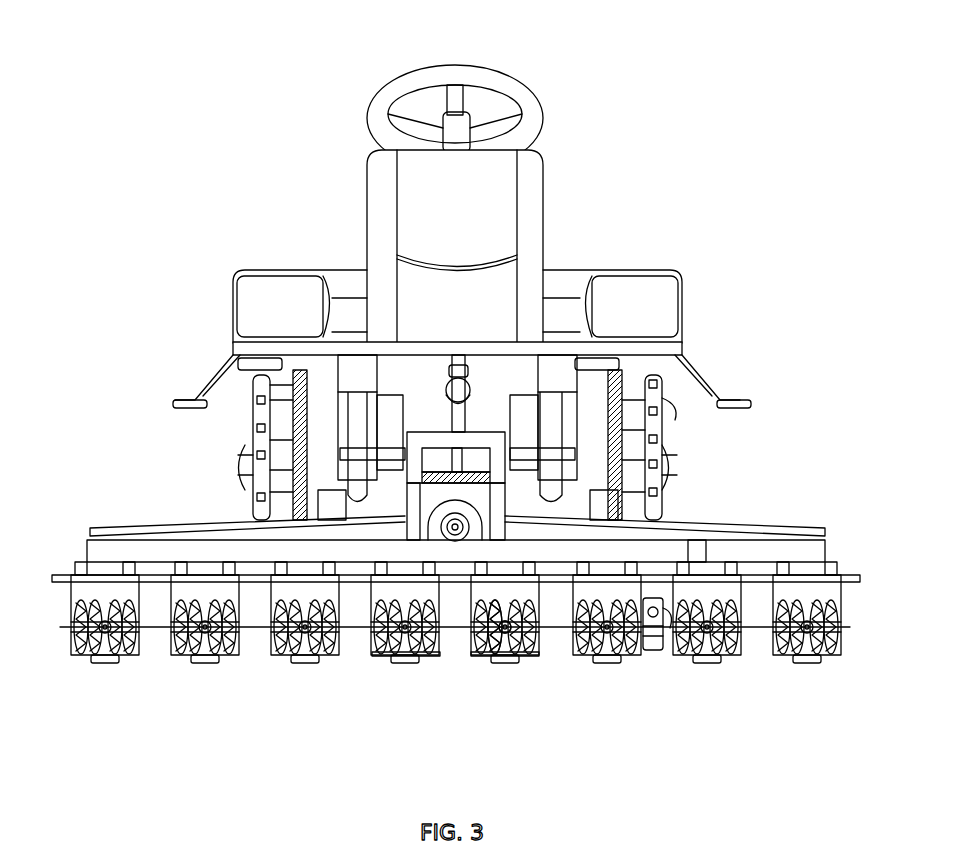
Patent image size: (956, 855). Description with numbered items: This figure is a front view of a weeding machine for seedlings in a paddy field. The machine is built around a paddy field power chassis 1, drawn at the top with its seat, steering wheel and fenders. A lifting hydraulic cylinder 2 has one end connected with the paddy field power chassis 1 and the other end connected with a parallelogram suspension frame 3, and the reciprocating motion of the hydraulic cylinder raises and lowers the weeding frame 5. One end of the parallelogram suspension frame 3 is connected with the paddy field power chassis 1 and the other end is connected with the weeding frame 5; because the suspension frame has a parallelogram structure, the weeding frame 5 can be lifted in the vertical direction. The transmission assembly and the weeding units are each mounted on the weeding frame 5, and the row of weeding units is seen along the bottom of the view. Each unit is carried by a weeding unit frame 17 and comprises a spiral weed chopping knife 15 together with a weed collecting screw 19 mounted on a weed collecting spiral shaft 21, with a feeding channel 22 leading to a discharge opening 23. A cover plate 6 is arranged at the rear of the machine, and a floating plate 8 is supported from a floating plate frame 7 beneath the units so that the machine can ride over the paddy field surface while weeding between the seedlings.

The paddy field power chassis 1 is at (473, 247).
The lifting hydraulic cylinder 2 is at (453, 373).
The parallelogram suspension frame 3 is at (457, 452).
The weeding frame 5 is at (512, 447).
The cover plate 6 is at (697, 545).
The floating plate frame 7 is at (650, 638).
The floating plate 8 is at (612, 657).
The spiral weed chopping knife 15 is at (535, 655).
The weeding unit frame 17 is at (495, 655).
The weed collecting screw 19 is at (497, 655).
The weed collecting spiral shaft 21 is at (473, 655).
The feeding channel 22 is at (438, 655).
The discharge opening 23 is at (372, 655).